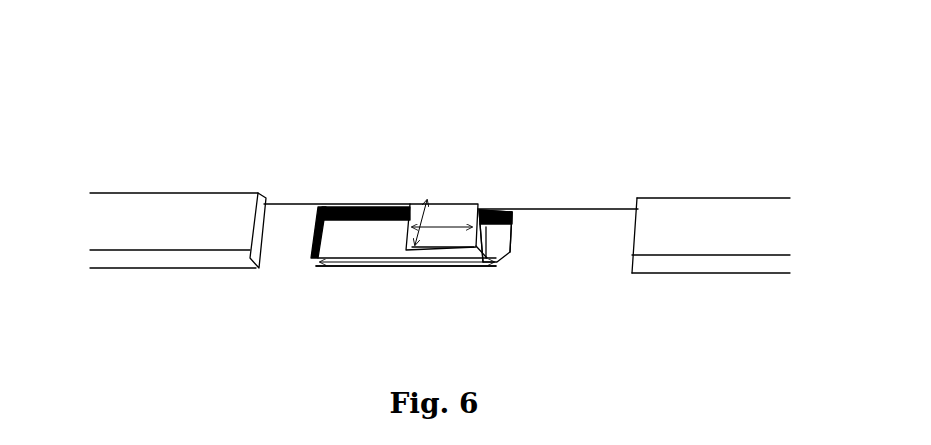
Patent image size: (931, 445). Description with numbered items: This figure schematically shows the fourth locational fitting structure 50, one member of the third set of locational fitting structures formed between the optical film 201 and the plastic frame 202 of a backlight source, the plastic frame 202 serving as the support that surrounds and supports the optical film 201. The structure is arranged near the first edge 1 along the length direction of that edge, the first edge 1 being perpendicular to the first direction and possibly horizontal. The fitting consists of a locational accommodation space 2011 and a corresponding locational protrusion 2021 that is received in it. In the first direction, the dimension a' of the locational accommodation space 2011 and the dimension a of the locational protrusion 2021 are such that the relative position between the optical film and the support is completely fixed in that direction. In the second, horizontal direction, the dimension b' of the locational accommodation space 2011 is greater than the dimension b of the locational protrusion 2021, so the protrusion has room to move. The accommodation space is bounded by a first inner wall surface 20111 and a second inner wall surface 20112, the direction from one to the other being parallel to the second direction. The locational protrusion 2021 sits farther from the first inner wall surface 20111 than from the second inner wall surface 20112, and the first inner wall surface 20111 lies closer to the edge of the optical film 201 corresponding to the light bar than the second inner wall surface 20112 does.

The fourth locational fitting structure 50 is at (316, 100).
The first edge 1 is at (533, 212).
The optical film 201 is at (713, 338).
The plastic frame 202 is at (168, 225).
The locational accommodation space 2011 is at (337, 205).
The locational protrusion 2021 is at (452, 208).
The first inner wall surface 20111 is at (318, 258).
The second inner wall surface 20112 is at (494, 254).
The dimension of the locational protrusion in the first direction a is at (394, 208).
The dimension of the locational protrusion in the second direction b is at (455, 194).
The dimension of the locational accommodation space in the first direction a' is at (529, 232).
The dimension of the locational accommodation space in the second direction b' is at (406, 290).